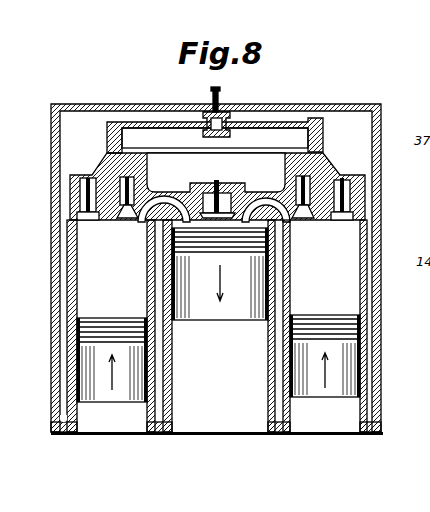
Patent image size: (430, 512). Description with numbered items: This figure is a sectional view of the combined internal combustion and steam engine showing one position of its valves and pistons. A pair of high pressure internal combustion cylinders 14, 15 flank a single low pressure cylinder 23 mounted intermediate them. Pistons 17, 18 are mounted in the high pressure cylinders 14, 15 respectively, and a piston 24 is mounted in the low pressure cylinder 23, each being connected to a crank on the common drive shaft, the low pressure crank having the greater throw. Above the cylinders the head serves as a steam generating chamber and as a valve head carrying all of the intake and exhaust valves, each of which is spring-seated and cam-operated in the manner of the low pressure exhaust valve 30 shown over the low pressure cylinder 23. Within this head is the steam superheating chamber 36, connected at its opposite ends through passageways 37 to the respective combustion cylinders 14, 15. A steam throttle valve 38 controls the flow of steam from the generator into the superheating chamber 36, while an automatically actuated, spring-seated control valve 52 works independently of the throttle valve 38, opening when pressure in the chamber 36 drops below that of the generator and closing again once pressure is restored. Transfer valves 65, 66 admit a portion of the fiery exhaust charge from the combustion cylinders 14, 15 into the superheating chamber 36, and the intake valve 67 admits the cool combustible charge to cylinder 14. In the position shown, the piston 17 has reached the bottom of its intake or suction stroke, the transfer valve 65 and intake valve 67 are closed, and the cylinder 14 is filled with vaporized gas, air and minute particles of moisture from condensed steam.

The high pressure internal combustion cylinder 14 is at (95, 290).
The high pressure internal combustion cylinder 15 is at (338, 291).
The piston 17 is at (95, 353).
The piston 18 is at (350, 400).
The low pressure cylinder 23 is at (222, 422).
The piston 24 is at (212, 322).
The low pressure exhaust valve 30 is at (217, 219).
The steam superheating chamber 36 is at (337, 106).
The passageways 37 is at (98, 183).
The steam throttle valve 38 is at (222, 100).
The control valve 52 is at (232, 137).
The transfer valve 65 is at (131, 221).
The transfer valve 66 is at (302, 221).
The intake valve 67 is at (91, 221).